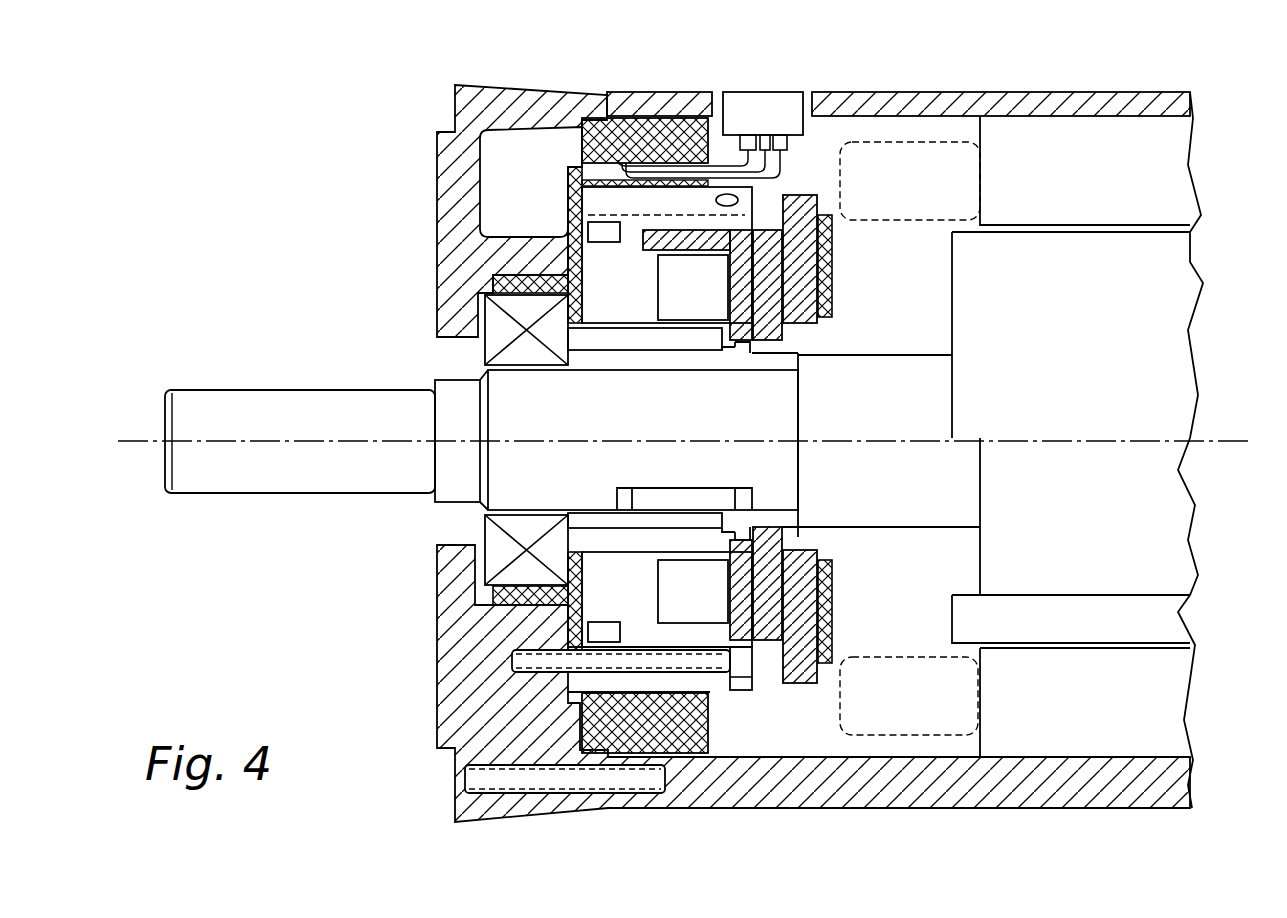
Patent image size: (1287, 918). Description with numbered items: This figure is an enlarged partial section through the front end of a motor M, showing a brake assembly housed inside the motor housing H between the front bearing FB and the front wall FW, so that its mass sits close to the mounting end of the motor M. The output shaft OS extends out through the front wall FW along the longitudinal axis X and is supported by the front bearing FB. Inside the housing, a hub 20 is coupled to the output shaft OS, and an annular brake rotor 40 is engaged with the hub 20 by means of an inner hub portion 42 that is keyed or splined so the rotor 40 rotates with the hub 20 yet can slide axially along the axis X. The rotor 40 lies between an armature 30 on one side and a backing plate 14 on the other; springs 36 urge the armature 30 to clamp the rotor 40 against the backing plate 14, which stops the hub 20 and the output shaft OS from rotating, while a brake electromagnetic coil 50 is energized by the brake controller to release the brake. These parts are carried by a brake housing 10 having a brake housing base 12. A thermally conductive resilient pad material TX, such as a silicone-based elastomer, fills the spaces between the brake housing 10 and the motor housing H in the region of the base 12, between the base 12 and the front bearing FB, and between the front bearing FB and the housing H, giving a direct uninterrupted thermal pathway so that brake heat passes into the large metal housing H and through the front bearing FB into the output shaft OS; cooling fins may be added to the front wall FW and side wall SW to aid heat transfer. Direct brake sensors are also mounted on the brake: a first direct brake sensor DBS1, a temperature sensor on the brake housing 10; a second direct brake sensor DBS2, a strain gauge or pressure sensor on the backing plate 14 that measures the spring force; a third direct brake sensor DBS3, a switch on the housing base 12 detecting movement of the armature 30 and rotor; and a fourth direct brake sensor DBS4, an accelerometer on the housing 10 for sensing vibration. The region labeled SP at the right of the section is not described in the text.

The brake housing 10 is at (597, 254).
The brake housing base 12 is at (712, 693).
The backing plate 14 is at (795, 255).
The hub 20 is at (785, 410).
The armature 30 is at (738, 285).
The springs 36 is at (655, 250).
The brake rotor 40 is at (768, 282).
The hub portion 42 is at (798, 350).
The brake electromagnetic coil 50 is at (690, 292).
The motor M is at (414, 146).
The motor housing H is at (866, 82).
The thermally conductive pad material TX is at (666, 135).
The side wall SW is at (1020, 92).
The first direct brake sensor DBS1 is at (600, 232).
The second direct brake sensor DBS2 is at (826, 300).
The third direct brake sensor DBS3 is at (738, 200).
The fourth direct brake sensor DBS4 is at (603, 633).
The front bearing FB is at (462, 355).
The output shaft OS is at (262, 390).
The front wall FW is at (540, 596).
The spindle SP is at (809, 732).
The longitudinal axis X is at (684, 442).